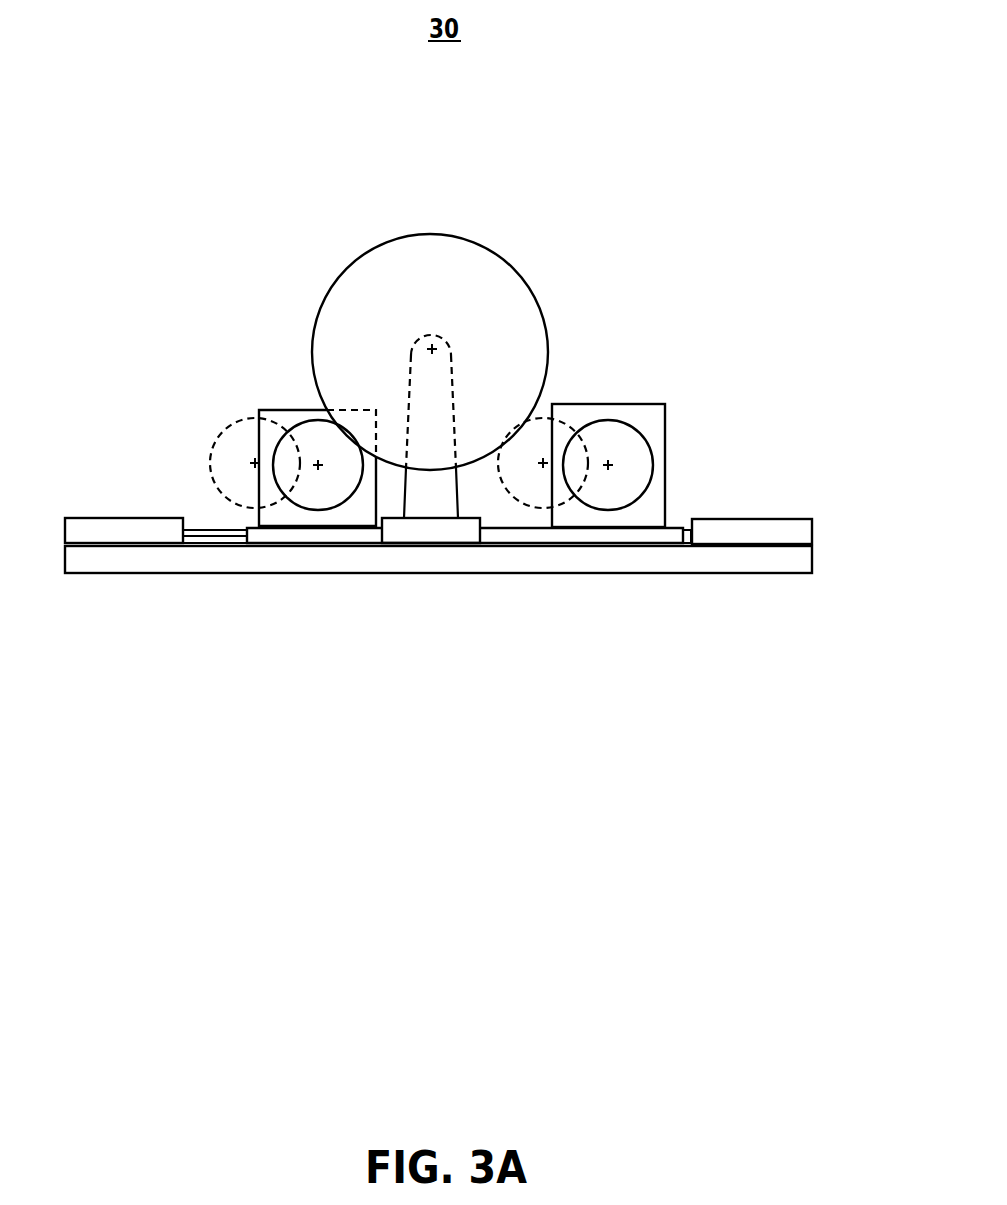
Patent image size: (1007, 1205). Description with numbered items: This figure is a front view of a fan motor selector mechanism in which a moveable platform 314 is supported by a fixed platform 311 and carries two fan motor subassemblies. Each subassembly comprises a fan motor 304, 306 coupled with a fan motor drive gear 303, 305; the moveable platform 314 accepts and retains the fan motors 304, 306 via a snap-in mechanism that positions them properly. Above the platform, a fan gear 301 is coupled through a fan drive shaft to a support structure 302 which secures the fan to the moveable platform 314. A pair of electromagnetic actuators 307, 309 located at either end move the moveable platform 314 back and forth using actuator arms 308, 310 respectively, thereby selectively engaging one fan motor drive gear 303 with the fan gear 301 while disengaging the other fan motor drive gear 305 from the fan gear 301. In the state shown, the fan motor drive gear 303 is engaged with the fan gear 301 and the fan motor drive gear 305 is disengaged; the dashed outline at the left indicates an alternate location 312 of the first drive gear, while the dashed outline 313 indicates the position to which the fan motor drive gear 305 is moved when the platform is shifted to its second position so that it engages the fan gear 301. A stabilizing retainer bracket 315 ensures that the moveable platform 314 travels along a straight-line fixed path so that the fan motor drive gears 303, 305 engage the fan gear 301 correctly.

The fan gear 301 is at (531, 259).
The support structure 302 is at (471, 382).
The fan motor drive gear 303 is at (300, 405).
The fan motor 304 is at (256, 395).
The fan motor drive gear 305 is at (660, 437).
The fan motor 306 is at (659, 388).
The electromagnetic actuator 307 is at (92, 502).
The actuator arm 308 is at (202, 512).
The electromagnetic actuator 309 is at (796, 504).
The actuator arm 310 is at (685, 511).
The fixed platform 311 is at (706, 568).
The first motor engaged position 312 is at (206, 431).
The position 313 is at (572, 409).
The moveable platform 314 is at (513, 544).
The stabilizing retainer bracket 315 is at (450, 546).